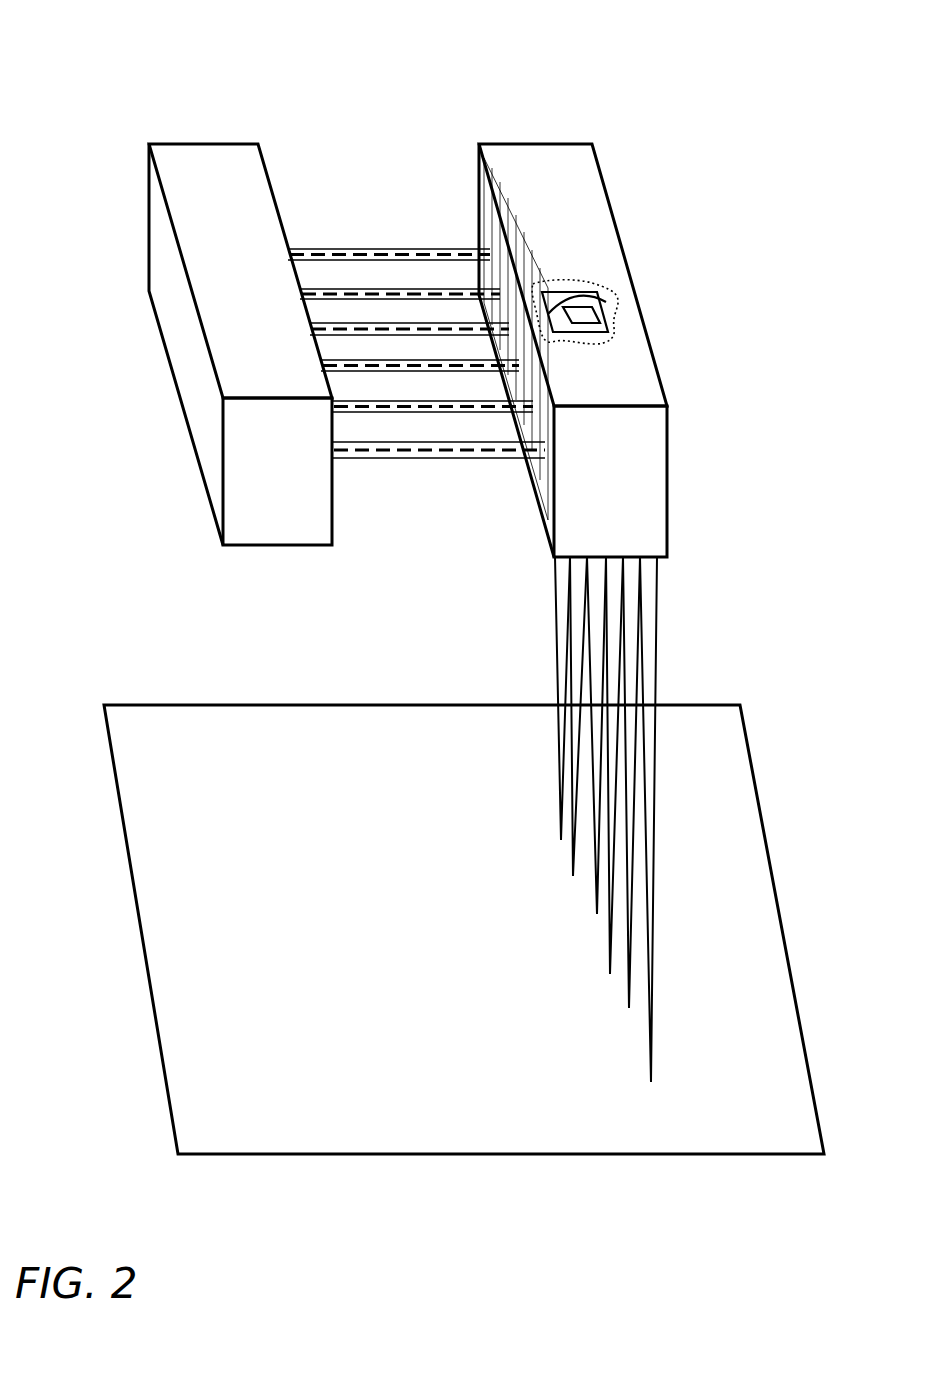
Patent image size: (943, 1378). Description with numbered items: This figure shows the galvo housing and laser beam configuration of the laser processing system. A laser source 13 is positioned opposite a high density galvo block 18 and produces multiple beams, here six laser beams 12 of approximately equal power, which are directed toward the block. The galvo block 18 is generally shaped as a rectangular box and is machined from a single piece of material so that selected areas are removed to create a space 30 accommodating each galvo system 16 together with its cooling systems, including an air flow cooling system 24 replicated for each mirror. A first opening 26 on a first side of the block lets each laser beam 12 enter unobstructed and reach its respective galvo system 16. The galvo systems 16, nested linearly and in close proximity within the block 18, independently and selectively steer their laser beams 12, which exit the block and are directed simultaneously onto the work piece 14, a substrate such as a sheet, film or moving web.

The laser beams 12 is at (437, 232).
The laser source 13 is at (225, 207).
The work piece 14 is at (293, 1020).
The galvo systems 16 is at (617, 325).
The galvo block 18 is at (525, 123).
The air flow cooling system 24 is at (578, 304).
The first opening 26 is at (542, 478).
The space 30 is at (600, 294).